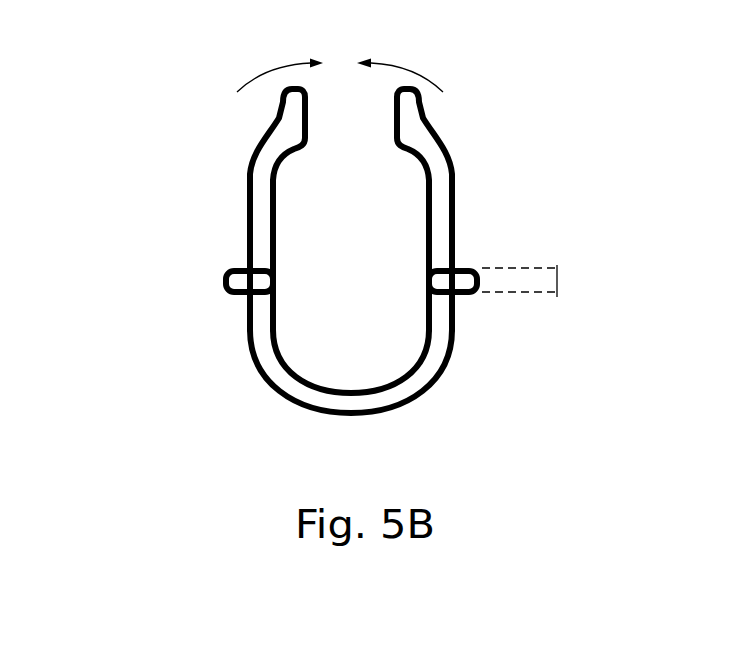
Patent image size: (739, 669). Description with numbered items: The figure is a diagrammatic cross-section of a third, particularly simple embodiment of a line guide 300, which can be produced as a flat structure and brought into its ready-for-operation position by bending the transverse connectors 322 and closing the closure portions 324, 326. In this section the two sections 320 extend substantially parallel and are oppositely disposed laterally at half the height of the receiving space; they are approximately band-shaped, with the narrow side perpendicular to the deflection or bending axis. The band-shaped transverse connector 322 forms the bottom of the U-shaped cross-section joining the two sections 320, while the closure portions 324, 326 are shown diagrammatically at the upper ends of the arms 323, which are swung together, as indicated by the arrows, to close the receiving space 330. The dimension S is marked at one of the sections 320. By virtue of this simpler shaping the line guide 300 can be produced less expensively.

The line guide 300 is at (365, 252).
The sections 320 is at (238, 282).
The transverse connectors 322 is at (370, 400).
The arm 323 is at (481, 176).
The closure portion 324 is at (437, 168).
The closure portion 326 is at (262, 190).
The opening 330 is at (370, 291).
The gap distance S is at (558, 280).